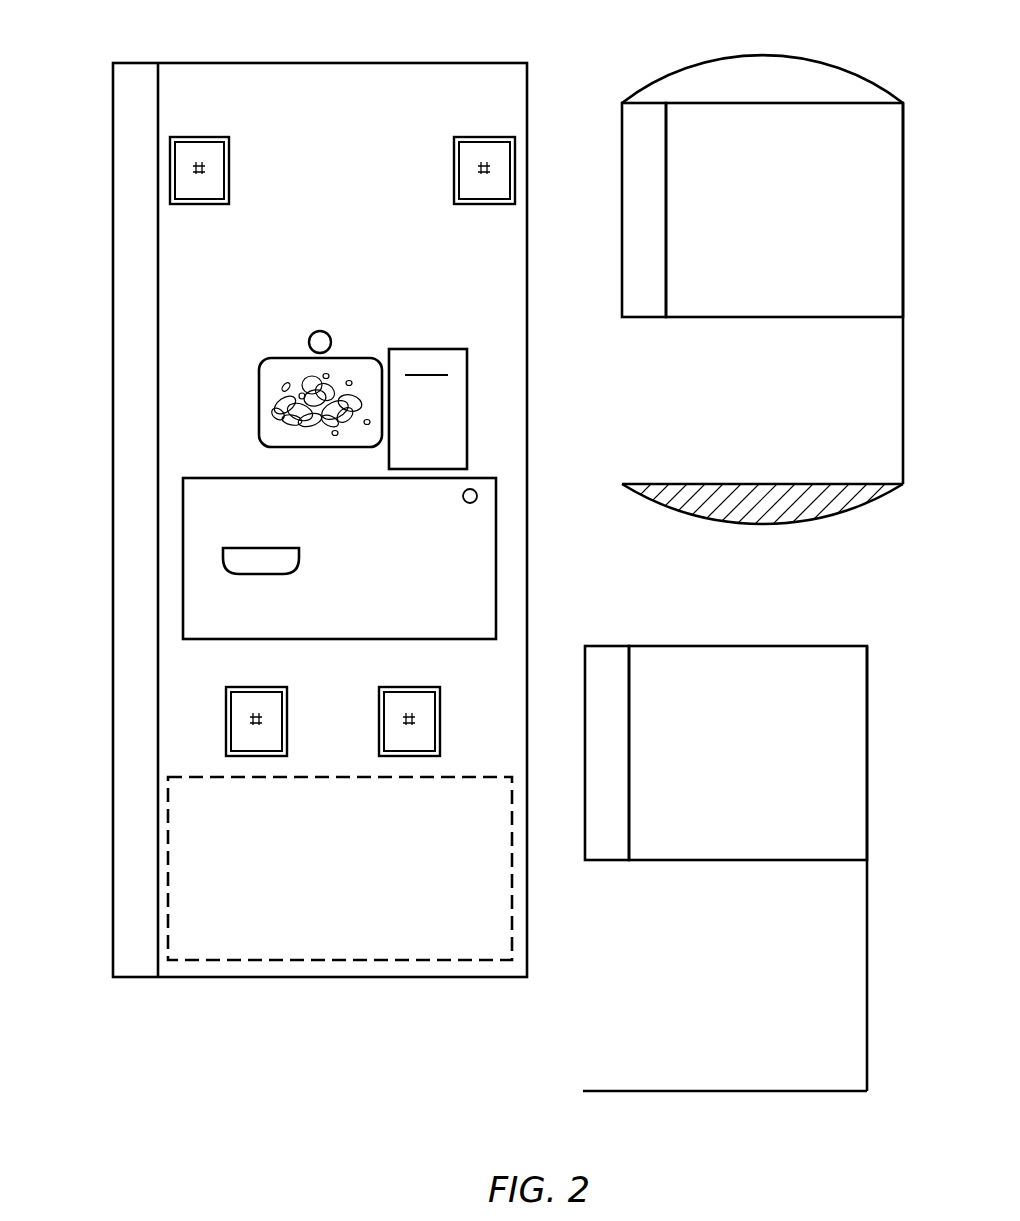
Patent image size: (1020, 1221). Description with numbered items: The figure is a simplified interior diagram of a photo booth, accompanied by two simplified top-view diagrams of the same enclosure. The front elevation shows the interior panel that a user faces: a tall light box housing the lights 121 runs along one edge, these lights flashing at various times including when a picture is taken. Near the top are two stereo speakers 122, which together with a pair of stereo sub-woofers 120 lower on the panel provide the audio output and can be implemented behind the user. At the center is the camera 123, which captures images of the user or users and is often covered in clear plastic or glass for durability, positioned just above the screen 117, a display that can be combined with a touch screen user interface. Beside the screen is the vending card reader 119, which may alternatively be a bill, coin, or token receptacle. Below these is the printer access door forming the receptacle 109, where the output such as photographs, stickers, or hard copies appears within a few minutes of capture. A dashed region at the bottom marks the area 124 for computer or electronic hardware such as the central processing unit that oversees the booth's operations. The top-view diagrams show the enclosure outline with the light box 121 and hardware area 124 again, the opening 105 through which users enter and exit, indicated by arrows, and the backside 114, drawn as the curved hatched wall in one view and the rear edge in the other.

The opening 105 is at (648, 445).
The receptacle 109 is at (395, 558).
The backside 114 is at (757, 809).
The screen 117 is at (275, 415).
The vending card reader 119 is at (486, 392).
The stereo sub-woofer 120 is at (341, 704).
The lights 121 is at (374, 489).
The stereo speakers 122 is at (374, 108).
The camera 123 is at (319, 304).
The area for computer or electronic hardware 124 is at (535, 574).